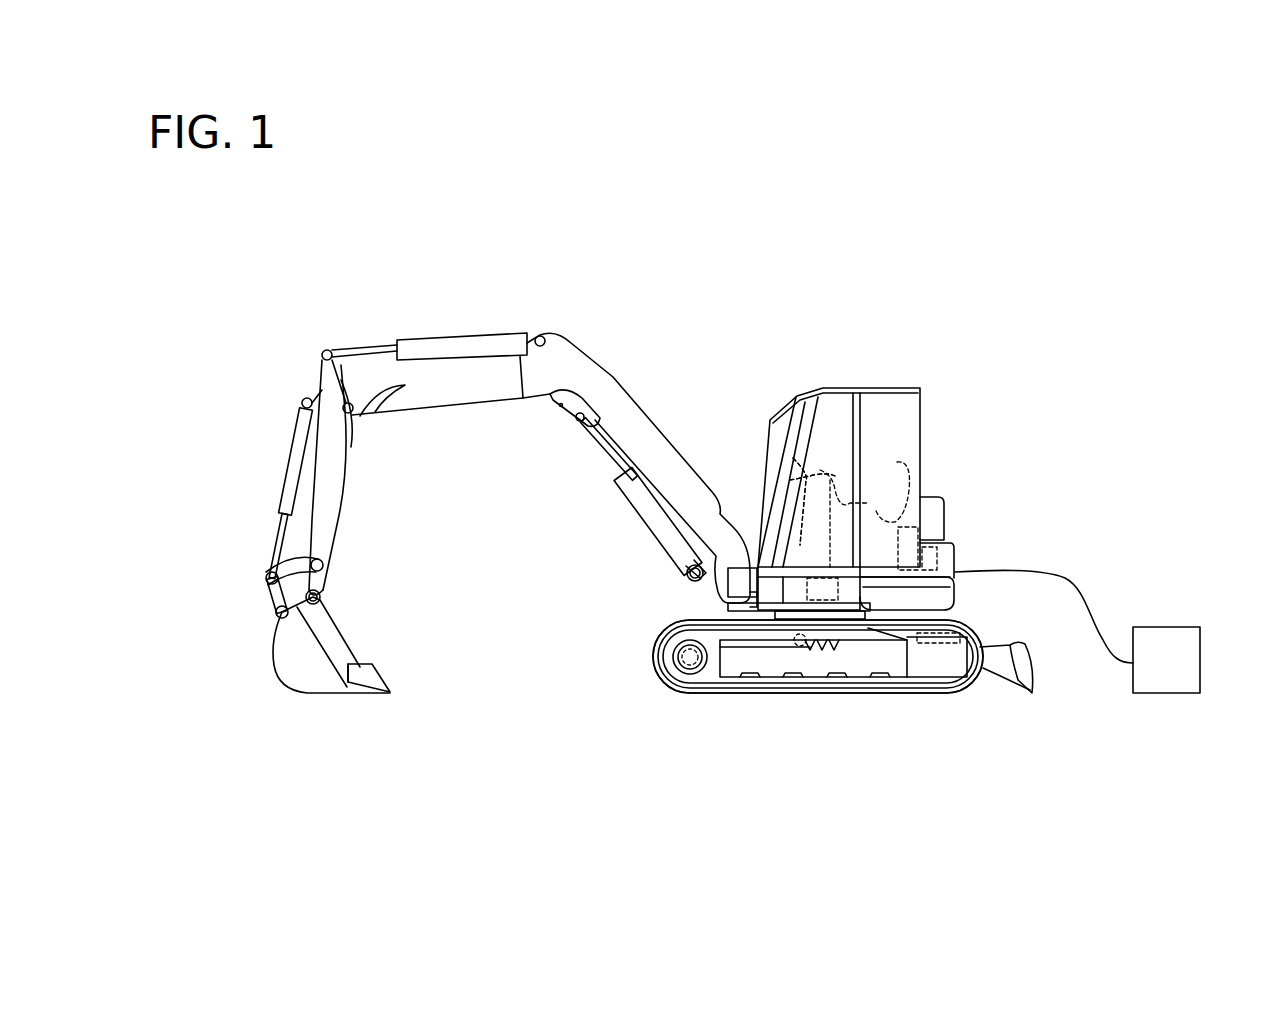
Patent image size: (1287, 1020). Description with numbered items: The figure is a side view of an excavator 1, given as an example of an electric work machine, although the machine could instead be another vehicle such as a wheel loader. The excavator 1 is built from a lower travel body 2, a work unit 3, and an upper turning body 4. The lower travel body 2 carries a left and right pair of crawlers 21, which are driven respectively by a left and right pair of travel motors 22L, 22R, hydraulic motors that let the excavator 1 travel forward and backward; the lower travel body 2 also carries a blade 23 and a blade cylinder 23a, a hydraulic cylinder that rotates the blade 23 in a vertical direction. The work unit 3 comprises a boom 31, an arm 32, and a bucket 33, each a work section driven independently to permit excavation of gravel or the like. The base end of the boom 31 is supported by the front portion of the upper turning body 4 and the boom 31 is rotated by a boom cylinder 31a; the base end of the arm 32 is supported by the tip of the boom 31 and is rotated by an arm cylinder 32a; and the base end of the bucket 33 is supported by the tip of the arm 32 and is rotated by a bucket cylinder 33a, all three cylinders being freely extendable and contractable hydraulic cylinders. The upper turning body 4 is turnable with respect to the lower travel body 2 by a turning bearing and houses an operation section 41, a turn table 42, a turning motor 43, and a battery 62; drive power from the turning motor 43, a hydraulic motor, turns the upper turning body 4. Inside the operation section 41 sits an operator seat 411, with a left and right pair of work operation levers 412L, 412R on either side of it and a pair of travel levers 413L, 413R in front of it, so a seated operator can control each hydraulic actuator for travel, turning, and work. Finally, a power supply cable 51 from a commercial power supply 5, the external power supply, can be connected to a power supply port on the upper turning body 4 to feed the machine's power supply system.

The excavator 1 is at (899, 296).
The lower travel body 2 is at (631, 638).
The work unit 3 is at (458, 469).
The upper turning body 4 is at (953, 446).
The commercial power supply 5 is at (1220, 638).
The crawler 21 is at (665, 653).
The left travel motor 22L is at (682, 692).
The right travel motor 22R is at (810, 692).
The blade 23 is at (1023, 645).
The blade cylinder 23a is at (950, 628).
The boom 31 is at (493, 400).
The boom cylinder 31a is at (655, 528).
The arm 32 is at (338, 500).
The arm cylinder 32a is at (455, 333).
The bucket 33 is at (287, 676).
The bucket cylinder 33a is at (292, 455).
The operation section 41 is at (860, 381).
The turn table 42 is at (730, 607).
The turning motor 43 is at (798, 628).
The power supply cable 51 is at (1068, 577).
The battery 62 is at (945, 565).
The operator seat 411 is at (925, 463).
The left work operation lever 412L is at (793, 458).
The right work operation lever 412R is at (751, 464).
The left travel lever 413L is at (790, 480).
The right travel lever 413R is at (763, 462).